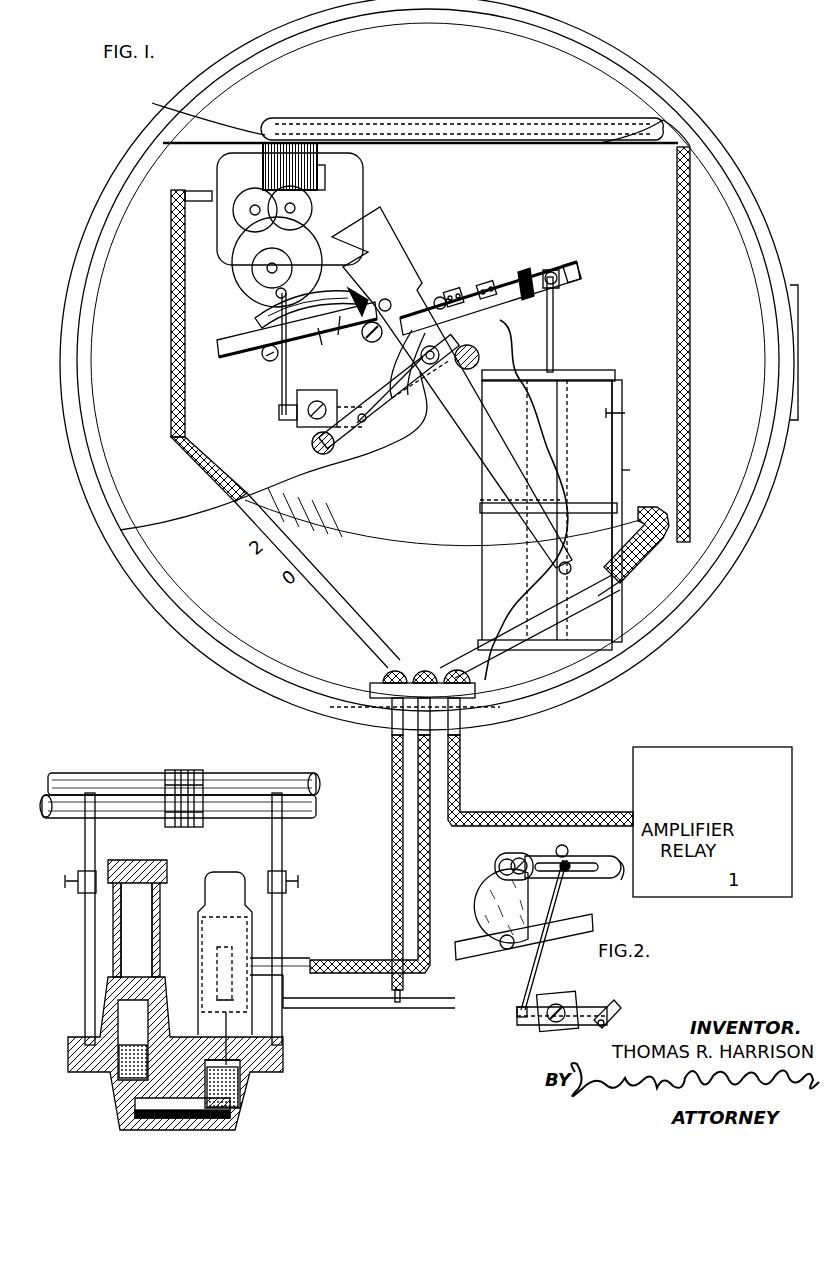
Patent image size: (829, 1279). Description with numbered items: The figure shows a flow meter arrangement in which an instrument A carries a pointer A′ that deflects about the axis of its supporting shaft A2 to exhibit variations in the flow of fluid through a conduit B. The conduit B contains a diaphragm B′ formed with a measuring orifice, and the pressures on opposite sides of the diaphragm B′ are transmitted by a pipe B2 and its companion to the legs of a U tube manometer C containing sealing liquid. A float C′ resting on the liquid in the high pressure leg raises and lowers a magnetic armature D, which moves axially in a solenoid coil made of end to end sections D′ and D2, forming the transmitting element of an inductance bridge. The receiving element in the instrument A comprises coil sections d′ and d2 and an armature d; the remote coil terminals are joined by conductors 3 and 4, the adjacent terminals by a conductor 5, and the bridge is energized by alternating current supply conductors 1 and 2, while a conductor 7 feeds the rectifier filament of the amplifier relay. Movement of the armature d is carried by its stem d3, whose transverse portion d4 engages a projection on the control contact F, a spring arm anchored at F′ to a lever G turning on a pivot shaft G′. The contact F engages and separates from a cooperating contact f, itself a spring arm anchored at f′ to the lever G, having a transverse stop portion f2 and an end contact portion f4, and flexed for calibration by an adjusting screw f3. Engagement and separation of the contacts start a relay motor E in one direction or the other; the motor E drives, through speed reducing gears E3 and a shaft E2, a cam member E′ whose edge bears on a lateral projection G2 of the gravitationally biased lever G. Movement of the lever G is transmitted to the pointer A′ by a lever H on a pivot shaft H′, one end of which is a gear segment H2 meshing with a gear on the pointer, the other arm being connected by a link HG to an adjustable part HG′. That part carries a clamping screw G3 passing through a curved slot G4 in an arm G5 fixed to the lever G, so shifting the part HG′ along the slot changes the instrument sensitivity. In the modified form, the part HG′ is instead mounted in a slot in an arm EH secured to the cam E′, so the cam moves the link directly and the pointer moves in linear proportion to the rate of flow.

In FIG. 1, the instrument A is at (110, 525).
In FIG. 1, the pointer A′ is at (466, 412).
In FIG. 1, the supporting shaft A2 is at (470, 354).
In FIG. 1, the relay motor E is at (357, 189).
In FIG. 1, the cam member E′ is at (246, 292).
In FIG. 2, the cam member E′ is at (492, 906).
In FIG. 1, the shaft E2 is at (266, 268).
In FIG. 2, the shaft E2 is at (504, 866).
In FIG. 1, the speed reducing gears E3 is at (232, 200).
In FIG. 1, the lever G is at (227, 346).
In FIG. 2, the lever G is at (482, 958).
In FIG. 1, the pivot shaft G′ is at (385, 300).
In FIG. 1, the lateral projection G2 is at (268, 359).
In FIG. 2, the lateral projection G2 is at (514, 950).
In FIG. 1, the clamping screw G3 is at (292, 298).
In FIG. 2, the clamping screw G3 is at (556, 857).
In FIG. 1, the curved slot G4 is at (320, 344).
In FIG. 1, the arm G5 is at (338, 335).
In FIG. 1, the link HG is at (282, 388).
In FIG. 2, the link HG is at (542, 916).
In FIG. 1, the adjustable part HG′ is at (276, 300).
In FIG. 2, the adjustable part HG′ is at (566, 854).
In FIG. 1, the lever H is at (290, 425).
In FIG. 2, the lever H is at (576, 1006).
In FIG. 1, the pivot shaft H′ is at (370, 421).
In FIG. 2, the pivot shaft H′ is at (612, 1006).
In FIG. 1, the gear segment H2 is at (388, 372).
In FIG. 1, the control contact F is at (560, 284).
In FIG. 1, the anchorage F′ is at (466, 306).
In FIG. 1, the cooperating contact f is at (476, 290).
In FIG. 1, the anchorage f′ is at (460, 288).
In FIG. 1, the transverse stop portion f2 is at (496, 290).
In FIG. 1, the adjusting screw f3 is at (530, 270).
In FIG. 1, the end contact portion f4 is at (577, 274).
In FIG. 1, the armature d is at (560, 465).
In FIG. 1, the coil section d′ is at (614, 596).
In FIG. 1, the coil section d2 is at (625, 413).
In FIG. 1, the stem d3 is at (553, 344).
In FIG. 1, the transverse portion d4 is at (551, 270).
In FIG. 1, the alternating current supply conductor 1 is at (346, 1008).
In FIG. 1, the alternating current supply conductor 2 is at (358, 1008).
In FIG. 1, the conductor 3 is at (622, 604).
In FIG. 1, the conductor 4 is at (630, 470).
In FIG. 1, the conductor 5 is at (630, 507).
In FIG. 1, the conductor 7 is at (433, 140).
In FIG. 1, the conduit B is at (226, 784).
In FIG. 1, the diaphragm B′ is at (180, 770).
In FIG. 1, the pipe B2 is at (85, 846).
In FIG. 1, the U tube manometer C is at (235, 1120).
In FIG. 1, the float C′ is at (246, 1084).
In FIG. 1, the armature D is at (217, 952).
In FIG. 1, the coil section D′ is at (210, 927).
In FIG. 1, the coil section D2 is at (212, 990).
In FIG. 2, the arm EH is at (620, 880).